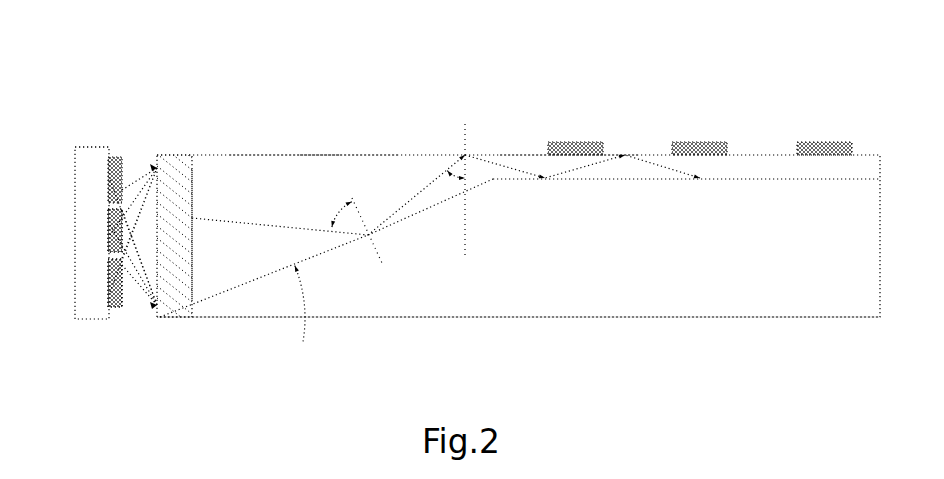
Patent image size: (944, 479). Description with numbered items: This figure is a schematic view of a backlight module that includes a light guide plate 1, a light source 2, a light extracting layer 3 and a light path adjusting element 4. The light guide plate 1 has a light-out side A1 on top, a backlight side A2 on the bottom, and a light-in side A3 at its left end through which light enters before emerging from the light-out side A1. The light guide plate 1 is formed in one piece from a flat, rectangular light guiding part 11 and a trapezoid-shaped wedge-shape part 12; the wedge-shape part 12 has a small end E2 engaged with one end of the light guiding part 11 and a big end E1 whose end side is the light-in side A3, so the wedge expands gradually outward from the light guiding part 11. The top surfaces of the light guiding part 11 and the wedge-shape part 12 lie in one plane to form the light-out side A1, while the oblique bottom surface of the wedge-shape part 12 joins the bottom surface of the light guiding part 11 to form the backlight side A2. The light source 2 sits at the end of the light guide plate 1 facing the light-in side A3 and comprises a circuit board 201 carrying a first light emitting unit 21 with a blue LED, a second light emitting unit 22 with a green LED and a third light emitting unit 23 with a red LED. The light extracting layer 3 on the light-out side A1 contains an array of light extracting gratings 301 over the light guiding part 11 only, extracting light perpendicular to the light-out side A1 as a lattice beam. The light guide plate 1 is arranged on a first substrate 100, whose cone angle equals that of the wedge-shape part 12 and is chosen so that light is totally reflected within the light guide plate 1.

The light guide plate 1 is at (368, 78).
The light source 2 is at (75, 147).
The circuit board 201 is at (97, 147).
The first light emitting unit 21 is at (117, 158).
The second light emitting unit 22 is at (108, 225).
The third light emitting unit 23 is at (118, 306).
The light path adjusting element 4 is at (178, 156).
The big end E1 is at (203, 188).
The light-out side A1 is at (283, 155).
The wedge-shape part 12 is at (351, 164).
The light guiding part 11 is at (566, 146).
The small end E2 is at (470, 168).
The light extracting layer 3 is at (700, 94).
The light extracting grating 301 is at (598, 142).
The first substrate 100 is at (659, 305).
The backlight side A2 is at (758, 180).
The light-in side A3 is at (195, 257).